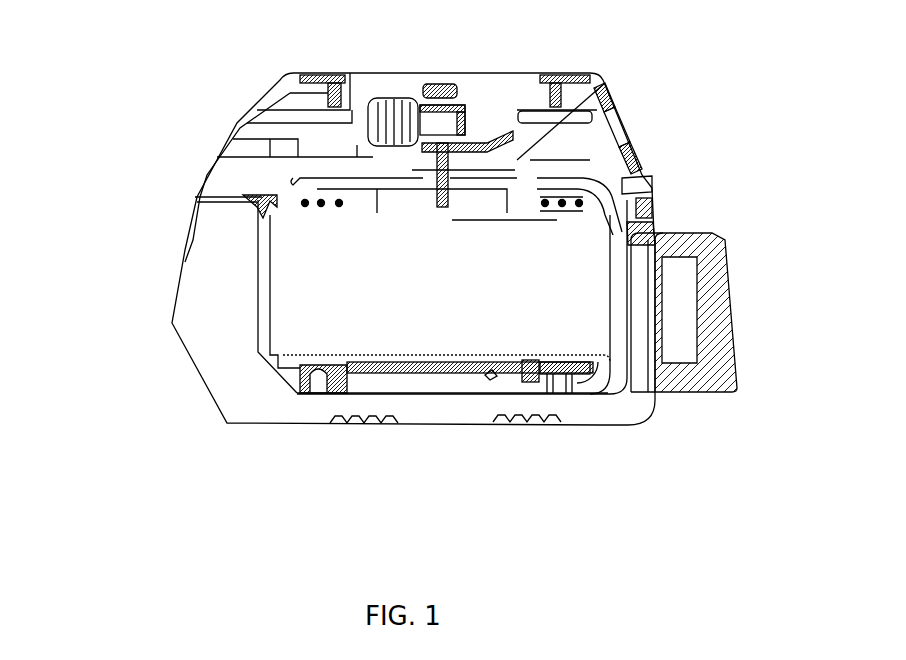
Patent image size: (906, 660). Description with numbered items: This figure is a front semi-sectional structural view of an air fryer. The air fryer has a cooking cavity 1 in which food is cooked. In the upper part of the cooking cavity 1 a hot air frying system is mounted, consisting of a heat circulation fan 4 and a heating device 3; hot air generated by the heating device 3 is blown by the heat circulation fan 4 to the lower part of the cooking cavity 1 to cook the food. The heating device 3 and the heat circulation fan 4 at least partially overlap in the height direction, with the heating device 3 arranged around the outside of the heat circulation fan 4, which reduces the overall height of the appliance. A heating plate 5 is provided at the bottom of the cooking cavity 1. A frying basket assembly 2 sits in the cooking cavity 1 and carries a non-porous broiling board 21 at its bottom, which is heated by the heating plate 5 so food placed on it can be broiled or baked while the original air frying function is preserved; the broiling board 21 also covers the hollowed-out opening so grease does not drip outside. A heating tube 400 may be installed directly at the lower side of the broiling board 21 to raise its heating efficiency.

The cooking cavity 1 is at (255, 308).
The frying basket assembly 2 is at (260, 338).
The heating device 3 is at (303, 200).
The heat circulation fan 4 is at (605, 83).
The heating plate 5 is at (328, 392).
The broiling board 21 is at (415, 370).
The heating tube 400 is at (524, 382).